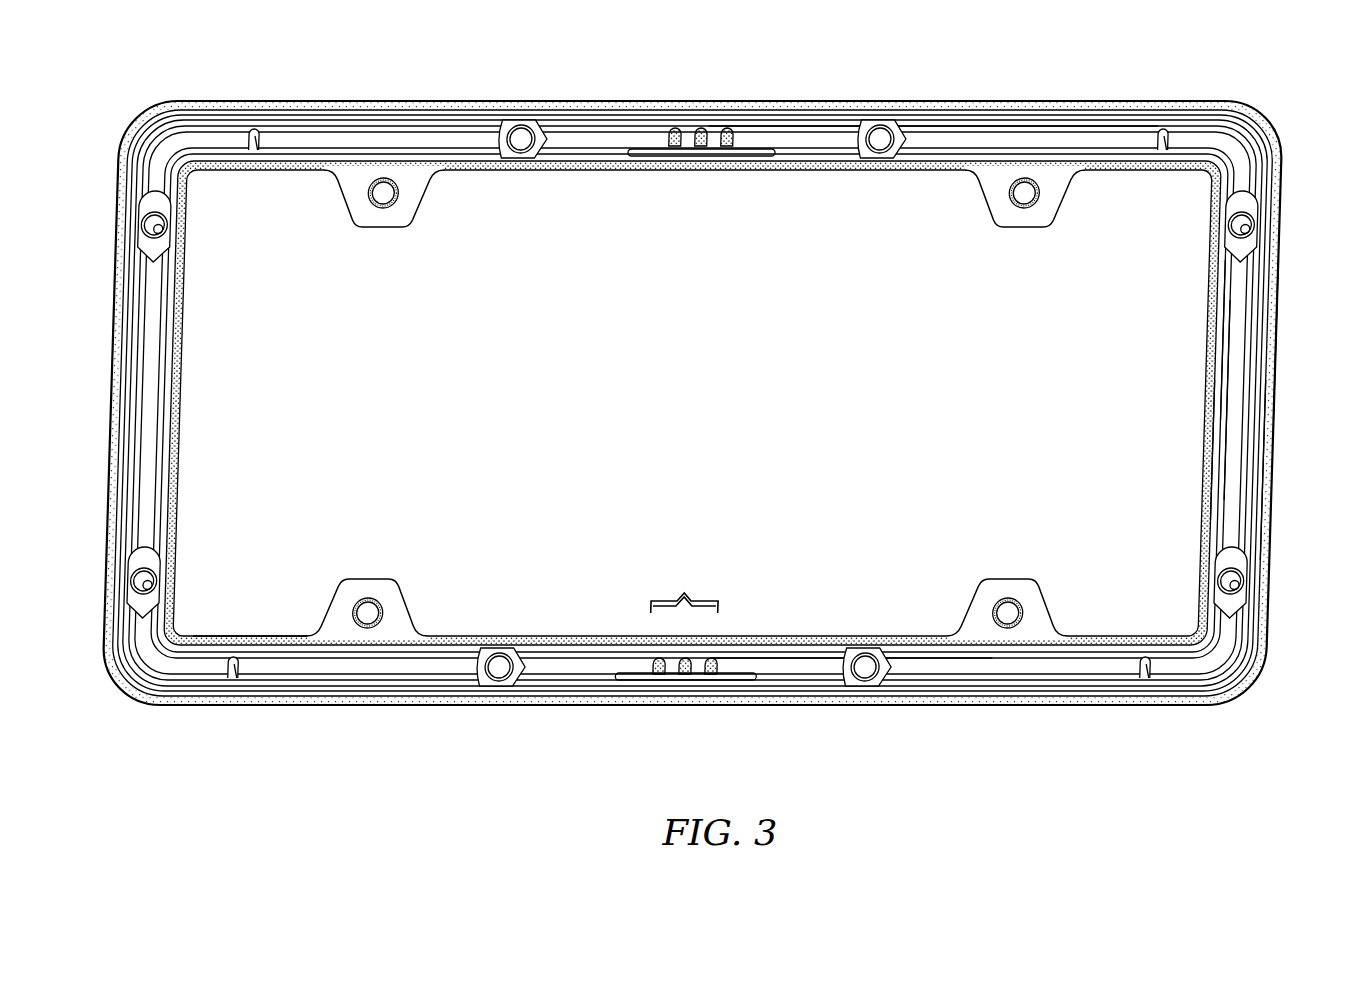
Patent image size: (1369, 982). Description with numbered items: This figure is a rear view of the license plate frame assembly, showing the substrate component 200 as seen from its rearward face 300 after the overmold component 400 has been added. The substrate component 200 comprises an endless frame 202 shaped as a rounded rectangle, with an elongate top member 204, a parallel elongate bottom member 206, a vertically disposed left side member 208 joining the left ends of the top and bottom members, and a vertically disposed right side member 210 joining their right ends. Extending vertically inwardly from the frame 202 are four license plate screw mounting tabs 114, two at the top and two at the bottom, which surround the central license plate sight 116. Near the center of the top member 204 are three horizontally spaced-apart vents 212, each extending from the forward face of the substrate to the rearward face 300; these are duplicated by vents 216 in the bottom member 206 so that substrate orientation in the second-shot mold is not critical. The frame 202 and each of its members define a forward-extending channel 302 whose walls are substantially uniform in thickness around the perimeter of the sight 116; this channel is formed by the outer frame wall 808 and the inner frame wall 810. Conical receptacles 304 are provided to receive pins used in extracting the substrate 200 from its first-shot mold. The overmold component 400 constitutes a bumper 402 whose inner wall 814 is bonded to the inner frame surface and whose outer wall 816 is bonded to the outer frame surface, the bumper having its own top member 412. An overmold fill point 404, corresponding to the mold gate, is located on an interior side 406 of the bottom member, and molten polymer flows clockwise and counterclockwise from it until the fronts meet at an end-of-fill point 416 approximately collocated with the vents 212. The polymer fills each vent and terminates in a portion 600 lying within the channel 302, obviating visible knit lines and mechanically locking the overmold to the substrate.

The license plate screw mounting tab 114 is at (384, 218).
The license plate sight 116 is at (722, 413).
The substrate component 200 is at (427, 105).
The frame 202 is at (172, 312).
The top member 204 is at (942, 127).
The bottom member 206 is at (796, 660).
The left side member 208 is at (1235, 508).
The right side member 210 is at (162, 452).
The vent 212 is at (690, 150).
The vent 216 is at (685, 587).
The rearward face 300 is at (165, 378).
The forward-extending channel 302 is at (1228, 378).
The conical receptacle 304 is at (516, 158).
The overmold component 400 is at (180, 262).
The bumper 402 is at (178, 516).
The overmold fill point 404 is at (680, 634).
The interior side 406 is at (255, 633).
The top member 412 is at (310, 100).
The end-of-fill point 416 is at (703, 128).
The portion 600 is at (666, 150).
The frame wall 808 is at (1268, 300).
The frame wall 810 is at (1222, 290).
The inner wall 814 is at (1218, 440).
The outer wall 816 is at (1272, 448).